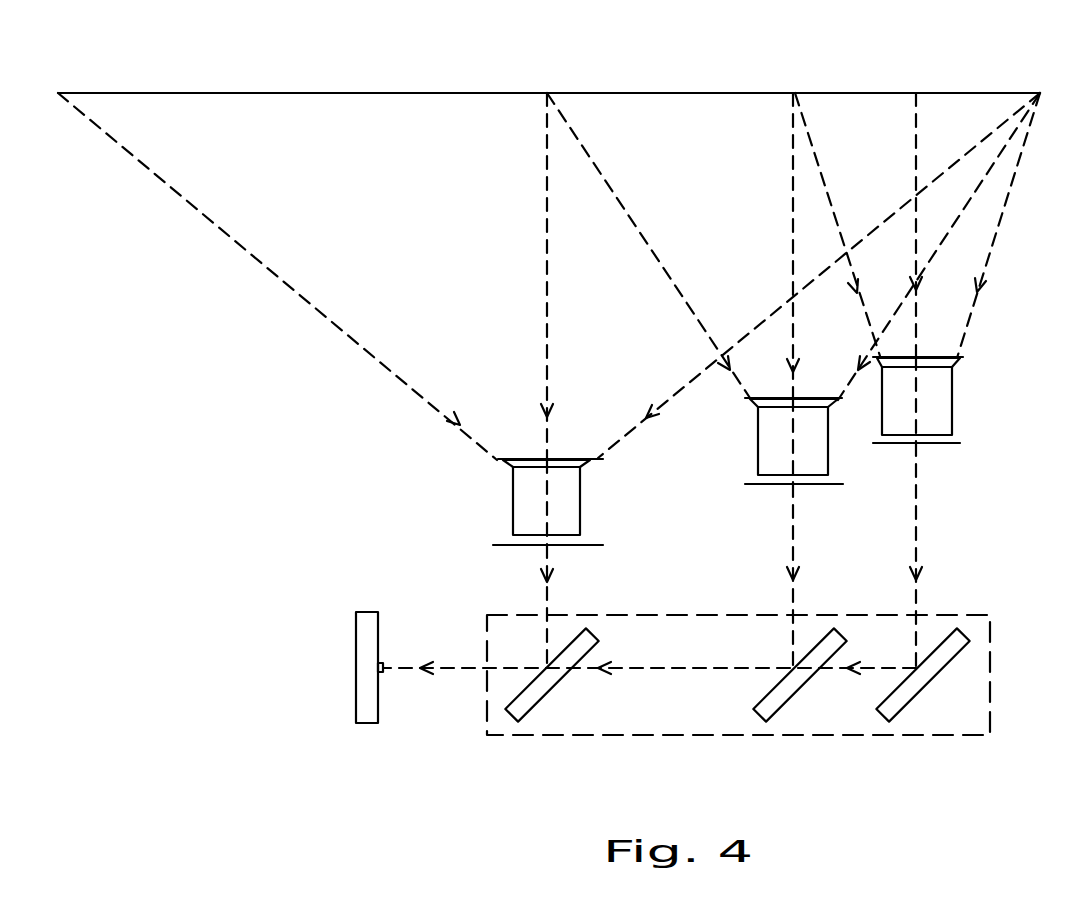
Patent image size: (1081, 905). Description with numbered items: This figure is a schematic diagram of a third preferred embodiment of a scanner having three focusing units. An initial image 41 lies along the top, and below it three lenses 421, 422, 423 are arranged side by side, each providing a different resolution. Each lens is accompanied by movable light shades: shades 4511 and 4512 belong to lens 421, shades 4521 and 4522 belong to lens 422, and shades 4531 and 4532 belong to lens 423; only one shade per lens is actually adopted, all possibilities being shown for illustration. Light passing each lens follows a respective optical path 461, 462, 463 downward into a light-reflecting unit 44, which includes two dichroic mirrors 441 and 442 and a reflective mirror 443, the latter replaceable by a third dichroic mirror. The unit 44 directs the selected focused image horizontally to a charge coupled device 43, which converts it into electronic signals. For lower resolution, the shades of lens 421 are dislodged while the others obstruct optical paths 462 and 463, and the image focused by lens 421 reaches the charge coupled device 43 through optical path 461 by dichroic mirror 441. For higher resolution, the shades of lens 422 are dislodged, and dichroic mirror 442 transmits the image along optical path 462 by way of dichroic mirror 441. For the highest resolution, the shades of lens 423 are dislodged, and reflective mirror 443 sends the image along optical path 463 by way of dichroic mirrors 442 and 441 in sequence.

The initial image 41 is at (683, 93).
The lens 421 is at (572, 518).
The lens 422 is at (820, 457).
The lens 423 is at (942, 400).
The movable light shade 4511 is at (497, 459).
The movable light shade 4512 is at (493, 546).
The movable light shade 4521 is at (753, 399).
The movable light shade 4522 is at (757, 485).
The movable light shade 4531 is at (957, 360).
The movable light shade 4532 is at (957, 443).
The optical path 461 is at (546, 593).
The optical path 462 is at (793, 593).
The optical path 463 is at (917, 593).
The charge coupled device 43 is at (356, 668).
The light-reflecting unit 44 is at (980, 674).
The dichroic mirror 441 is at (552, 683).
The dichroic mirror 442 is at (797, 678).
The reflective mirror 443 is at (918, 678).